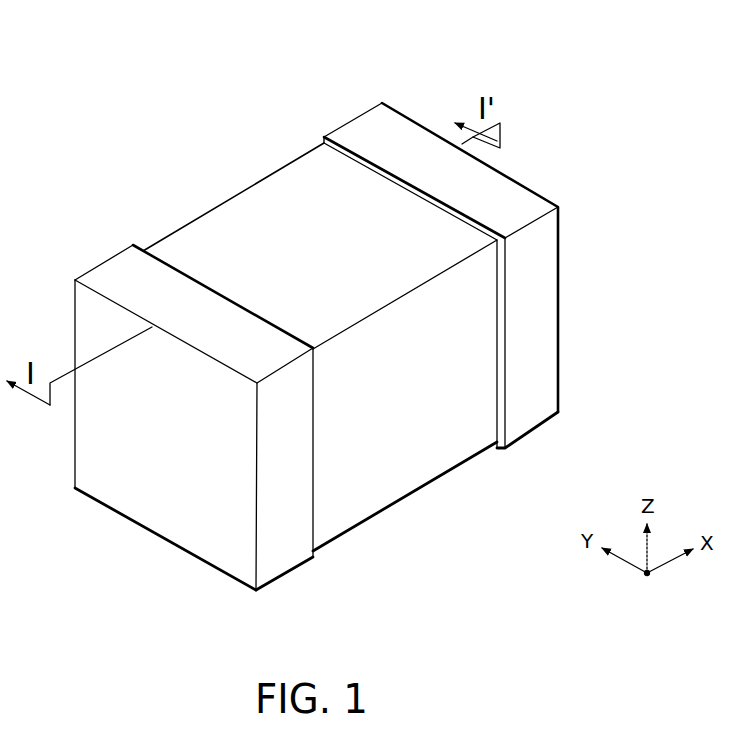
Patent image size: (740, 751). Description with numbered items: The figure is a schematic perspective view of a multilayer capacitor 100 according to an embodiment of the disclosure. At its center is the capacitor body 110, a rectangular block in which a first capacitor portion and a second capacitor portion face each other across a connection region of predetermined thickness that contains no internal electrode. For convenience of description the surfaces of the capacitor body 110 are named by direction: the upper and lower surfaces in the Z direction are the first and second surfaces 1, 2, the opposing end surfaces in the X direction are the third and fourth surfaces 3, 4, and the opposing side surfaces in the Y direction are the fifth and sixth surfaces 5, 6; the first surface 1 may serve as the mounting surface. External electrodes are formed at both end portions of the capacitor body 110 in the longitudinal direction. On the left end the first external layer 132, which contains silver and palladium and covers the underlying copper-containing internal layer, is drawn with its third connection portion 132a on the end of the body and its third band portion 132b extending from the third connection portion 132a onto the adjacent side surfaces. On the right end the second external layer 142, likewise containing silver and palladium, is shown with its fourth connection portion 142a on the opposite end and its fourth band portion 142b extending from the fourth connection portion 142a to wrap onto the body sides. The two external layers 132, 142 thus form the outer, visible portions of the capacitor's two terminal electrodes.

The multilayer capacitor 100 is at (160, 35).
The capacitor body 110 is at (242, 210).
The first surface 1 is at (402, 494).
The second surface 2 is at (315, 201).
The third surface 3 is at (131, 428).
The fourth surface 4 is at (533, 188).
The fifth surface 5 is at (458, 395).
The sixth surface 6 is at (179, 229).
The first external layer 132 is at (122, 593).
The third connection portion 132a is at (220, 543).
The third band portion 132b is at (275, 552).
The second external layer 142 is at (662, 323).
The fourth connection portion 142a is at (558, 339).
The fourth band portion 142b is at (538, 387).